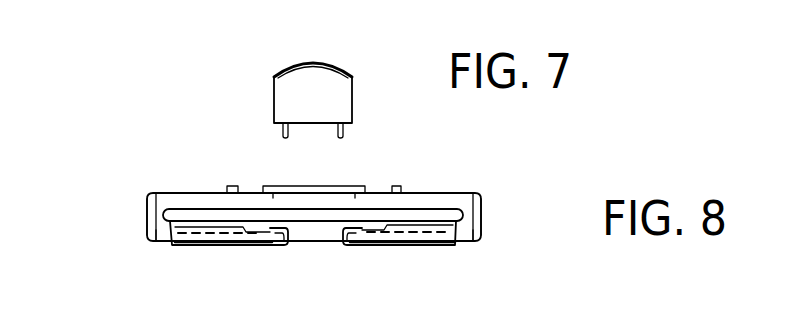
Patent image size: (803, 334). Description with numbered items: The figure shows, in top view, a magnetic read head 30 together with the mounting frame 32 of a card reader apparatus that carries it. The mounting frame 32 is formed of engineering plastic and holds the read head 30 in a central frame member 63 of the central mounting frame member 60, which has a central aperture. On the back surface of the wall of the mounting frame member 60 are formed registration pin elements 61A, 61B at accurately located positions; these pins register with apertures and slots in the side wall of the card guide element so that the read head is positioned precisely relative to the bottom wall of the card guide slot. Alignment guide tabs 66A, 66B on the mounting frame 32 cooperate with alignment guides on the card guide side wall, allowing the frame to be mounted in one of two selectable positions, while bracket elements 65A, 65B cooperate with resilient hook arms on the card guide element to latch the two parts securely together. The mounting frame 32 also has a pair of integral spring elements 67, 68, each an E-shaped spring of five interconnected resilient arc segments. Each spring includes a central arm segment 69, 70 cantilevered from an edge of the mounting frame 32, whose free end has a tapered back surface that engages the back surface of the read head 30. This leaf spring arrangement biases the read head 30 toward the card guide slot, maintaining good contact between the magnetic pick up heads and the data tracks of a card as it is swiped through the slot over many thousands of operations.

In FIG. 7, the read head 30 is at (338, 77).
In FIG. 8, the mounting frame 32 is at (494, 194).
In FIG. 8, the central mounting frame member 60 is at (460, 192).
In FIG. 8, the registration pin element 61A is at (233, 186).
In FIG. 8, the registration pin element 61B is at (397, 184).
In FIG. 8, the central frame member 63 is at (358, 185).
In FIG. 8, the bracket element 65A is at (146, 232).
In FIG. 8, the bracket element 65B is at (484, 235).
In FIG. 8, the alignment guide tab 66A is at (146, 220).
In FIG. 8, the alignment guide tab 66B is at (484, 224).
In FIG. 8, the integral spring element 67 is at (217, 247).
In FIG. 8, the integral spring element 68 is at (397, 248).
In FIG. 8, the central arm segment 69 is at (272, 247).
In FIG. 8, the central arm segment 70 is at (350, 247).